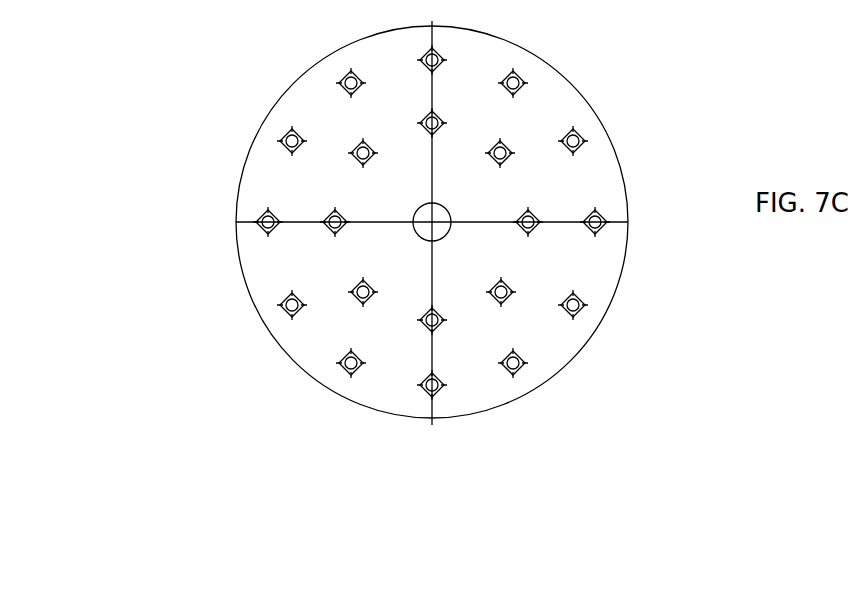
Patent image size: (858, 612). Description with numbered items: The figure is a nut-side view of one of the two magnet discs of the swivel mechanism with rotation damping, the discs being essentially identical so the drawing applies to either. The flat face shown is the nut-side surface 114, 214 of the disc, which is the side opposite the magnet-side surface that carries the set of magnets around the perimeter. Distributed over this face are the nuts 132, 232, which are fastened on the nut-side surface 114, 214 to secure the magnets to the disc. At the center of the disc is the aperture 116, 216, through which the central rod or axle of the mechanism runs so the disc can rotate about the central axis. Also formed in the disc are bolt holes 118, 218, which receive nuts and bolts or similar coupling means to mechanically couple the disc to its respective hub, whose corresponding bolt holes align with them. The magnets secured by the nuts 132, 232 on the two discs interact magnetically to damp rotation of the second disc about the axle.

The nut-side surface 114 is at (343, 223).
The nut-side surface 214 is at (310, 185).
The aperture 116 is at (612, 171).
The aperture 216 is at (442, 203).
The bolt hole 118 is at (219, 326).
The bolt hole 218 is at (355, 295).
The nut 132 is at (675, 357).
The nut 232 is at (583, 305).